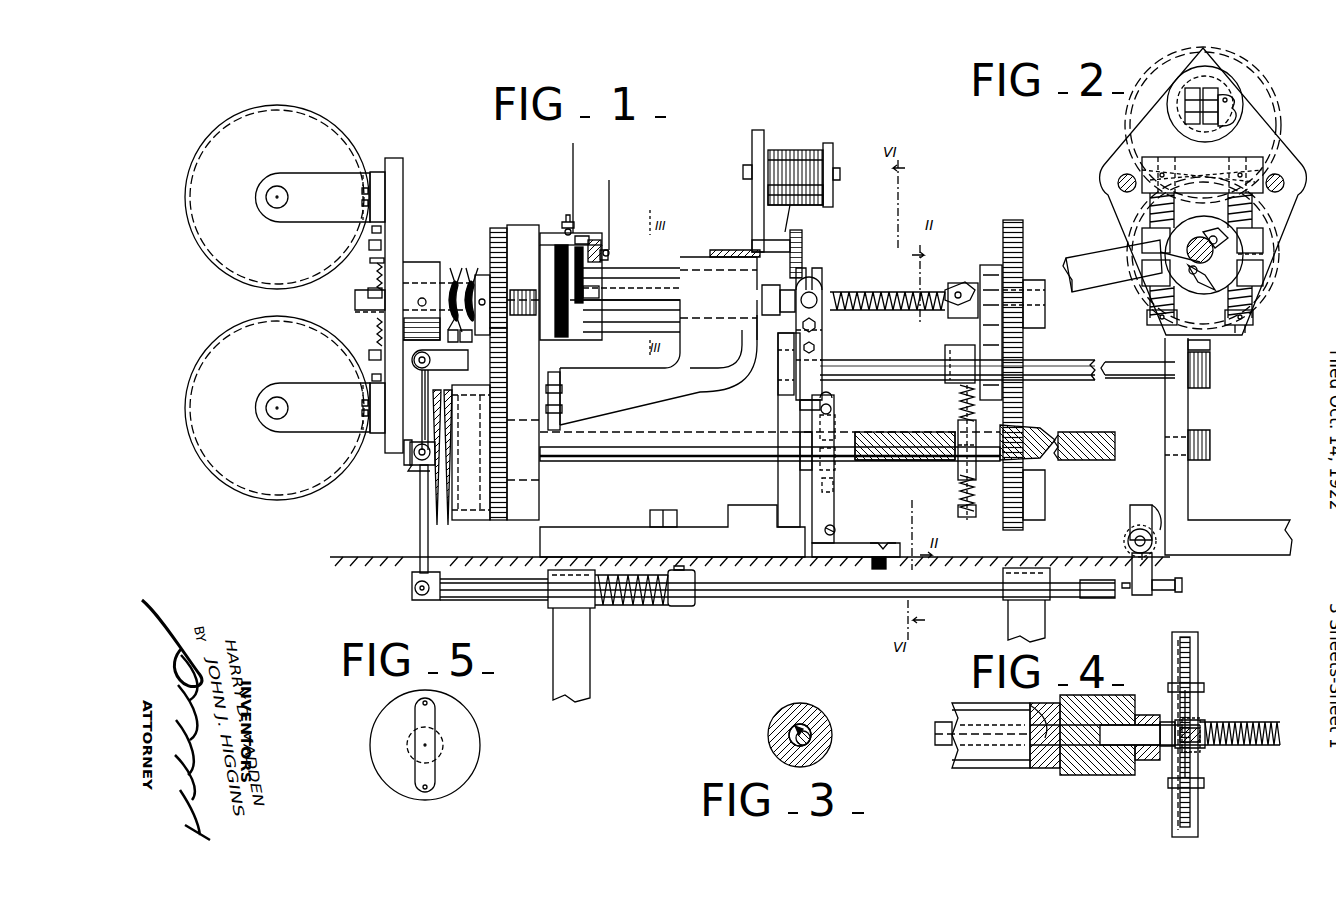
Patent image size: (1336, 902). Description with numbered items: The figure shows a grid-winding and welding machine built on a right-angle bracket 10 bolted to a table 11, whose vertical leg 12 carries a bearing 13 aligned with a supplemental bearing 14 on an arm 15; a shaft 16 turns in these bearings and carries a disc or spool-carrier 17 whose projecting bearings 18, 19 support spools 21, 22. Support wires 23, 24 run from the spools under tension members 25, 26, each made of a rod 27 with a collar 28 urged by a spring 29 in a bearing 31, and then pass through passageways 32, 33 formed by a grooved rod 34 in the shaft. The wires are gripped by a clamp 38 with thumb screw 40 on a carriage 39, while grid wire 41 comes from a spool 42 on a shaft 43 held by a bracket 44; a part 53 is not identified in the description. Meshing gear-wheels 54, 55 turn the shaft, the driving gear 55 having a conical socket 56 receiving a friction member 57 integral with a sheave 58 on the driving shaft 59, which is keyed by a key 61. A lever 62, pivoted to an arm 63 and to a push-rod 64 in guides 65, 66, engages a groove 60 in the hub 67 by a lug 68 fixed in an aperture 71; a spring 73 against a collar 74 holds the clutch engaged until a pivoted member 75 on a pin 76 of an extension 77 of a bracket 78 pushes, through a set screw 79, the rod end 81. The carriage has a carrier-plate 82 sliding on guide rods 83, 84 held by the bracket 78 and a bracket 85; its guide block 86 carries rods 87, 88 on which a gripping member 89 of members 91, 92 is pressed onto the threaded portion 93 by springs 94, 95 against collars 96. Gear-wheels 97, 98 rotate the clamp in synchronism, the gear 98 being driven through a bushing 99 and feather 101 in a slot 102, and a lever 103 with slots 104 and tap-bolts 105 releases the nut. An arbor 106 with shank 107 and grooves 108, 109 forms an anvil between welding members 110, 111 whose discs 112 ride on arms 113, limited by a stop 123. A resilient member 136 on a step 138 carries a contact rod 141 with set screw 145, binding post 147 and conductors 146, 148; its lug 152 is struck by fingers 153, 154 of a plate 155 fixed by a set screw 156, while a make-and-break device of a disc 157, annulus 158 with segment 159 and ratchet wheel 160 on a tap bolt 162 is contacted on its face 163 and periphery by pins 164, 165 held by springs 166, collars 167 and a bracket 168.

In FIG. 1, the right-angle bracket 10 is at (615, 527).
In FIG. 1, the platform or table 11 is at (398, 570).
In FIG. 1, the vertical leg 12 is at (536, 400).
In FIG. 1, the bearing 13 is at (510, 262).
In FIG. 1, the supplemental bearing 14 is at (737, 295).
In FIG. 1, the arm 15 is at (658, 362).
In FIG. 1, the shaft 16 is at (452, 280).
In FIG. 3, the shaft 16 is at (833, 732).
In FIG. 1, the disc or spool-carrier 17 is at (403, 168).
In FIG. 1, the projecting bearing 18 is at (295, 180).
In FIG. 1, the projecting bearing 19 is at (300, 388).
In FIG. 1, the spool 21 is at (212, 148).
In FIG. 1, the spool 22 is at (220, 343).
In FIG. 1, the support wire 23 is at (375, 290).
In FIG. 4, the support wire 23 is at (933, 730).
In FIG. 1, the support wire 24 is at (372, 312).
In FIG. 4, the support wire 24 is at (935, 745).
In FIG. 1, the tension member 25 is at (367, 274).
In FIG. 1, the tension member 26 is at (364, 335).
In FIG. 1, the rod 27 is at (384, 227).
In FIG. 1, the collar 28 is at (392, 300).
In FIG. 1, the spring 29 is at (382, 262).
In FIG. 1, the bearing 31 is at (380, 246).
In FIG. 1, the longitudinal passageway 32 is at (469, 338).
In FIG. 3, the longitudinal passageway 32 is at (805, 730).
In FIG. 4, the longitudinal passageway 32 is at (1030, 705).
In FIG. 1, the longitudinal passageway 33 is at (454, 338).
In FIG. 3, the longitudinal passageway 33 is at (818, 748).
In FIG. 4, the longitudinal passageway 33 is at (1085, 765).
In FIG. 3, the grooved rod 34 is at (776, 727).
In FIG. 4, the grooved rod 34 is at (1055, 752).
In FIG. 1, the clamp 38 is at (965, 280).
In FIG. 2, the clamp 38 is at (1192, 92).
In FIG. 1, the carriage 39 is at (965, 340).
In FIG. 1, the thumb screw 40 is at (948, 292).
In FIG. 2, the thumb screw 40 is at (1222, 96).
In FIG. 1, the grid wire 41 is at (797, 158).
In FIG. 1, the spool 42 is at (828, 192).
In FIG. 1, the shaft 43 is at (835, 174).
In FIG. 1, the bracket 44 is at (752, 148).
In FIG. 1, the link 53 is at (802, 258).
In FIG. 1, the gear-wheel 54 is at (497, 228).
In FIG. 1, the driving gear 55 is at (497, 520).
In FIG. 1, the conical socket 56 is at (468, 520).
In FIG. 1, the conical friction member 57 is at (440, 505).
In FIG. 1, the sheave or pulley 58 is at (440, 483).
In FIG. 1, the driving shaft 59 is at (605, 458).
In FIG. 2, the driving shaft 59 is at (1182, 268).
In FIG. 1, the groove 60 is at (420, 430).
In FIG. 1, the key 61 is at (546, 434).
In FIG. 1, the lever 62 is at (418, 478).
In FIG. 1, the arm 63 is at (440, 360).
In FIG. 1, the push-rod 64 is at (760, 598).
In FIG. 1, the guide 65 is at (562, 618).
In FIG. 1, the guide 66 is at (1008, 598).
In FIG. 1, the hub 67 is at (418, 466).
In FIG. 1, the lug 68 is at (428, 448).
In FIG. 1, the aperture 71 is at (430, 453).
In FIG. 1, the helical spring 73 is at (658, 605).
In FIG. 1, the collar 74 is at (690, 605).
In FIG. 1, the pivoted member 75 is at (1160, 568).
In FIG. 1, the pin 76 is at (1132, 541).
In FIG. 1, the extension 77 is at (1163, 525).
In FIG. 1, the bracket 78 is at (1195, 505).
In FIG. 1, the set screw 79 is at (1166, 590).
In FIG. 1, the end of rod 81 is at (1110, 598).
In FIG. 1, the carrier-plate 82 is at (1045, 368).
In FIG. 2, the carrier-plate 82 is at (1122, 152).
In FIG. 1, the guide rod 83 is at (1080, 368).
In FIG. 2, the guide rod 83 is at (1280, 175).
In FIG. 2, the guide rod 84 is at (1118, 183).
In FIG. 1, the bracket 85 is at (775, 480).
In FIG. 2, the guide block 86 is at (1200, 168).
In FIG. 1, the rigid rod 87 is at (970, 518).
In FIG. 2, the rigid rod 87 is at (1243, 325).
In FIG. 2, the rigid rod 88 is at (1162, 325).
In FIG. 2, the gripping member 89 is at (1265, 262).
In FIG. 2, the engaging member 91 is at (1265, 245).
In FIG. 2, the engaging member 92 is at (1262, 278).
In FIG. 1, the threaded portion of driving shaft 93 is at (905, 440).
In FIG. 2, the threaded portion of driving shaft 93 is at (1168, 256).
In FIG. 2, the helical spring 94 is at (1178, 212).
In FIG. 1, the spring 95 is at (960, 488).
In FIG. 2, the spring 95 is at (1222, 300).
In FIG. 2, the collar 96 is at (1235, 325).
In FIG. 1, the gear-wheel 97 is at (1028, 224).
In FIG. 2, the gear-wheel 97 is at (1262, 62).
In FIG. 1, the gear-wheel 98 is at (1025, 490).
In FIG. 1, the bushing 99 is at (978, 482).
In FIG. 1, the feather 101 is at (1040, 420).
In FIG. 1, the slot 102 is at (1075, 436).
In FIG. 2, the lever 103 is at (1112, 266).
In FIG. 2, the slot 104 is at (1214, 265).
In FIG. 2, the tap-bolt 105 is at (1202, 256).
In FIG. 4, the arbor 106 is at (1210, 748).
In FIG. 5, the arbor 106 is at (438, 720).
In FIG. 4, the shank 107 is at (1145, 752).
In FIG. 5, the shank 107 is at (440, 745).
In FIG. 4, the groove 108 is at (1208, 728).
In FIG. 4, the groove 109 is at (1200, 752).
In FIG. 4, the welding member 110 is at (1200, 668).
In FIG. 1, the welding member 111 is at (826, 318).
In FIG. 4, the welding member 111 is at (1196, 815).
In FIG. 4, the welding disc 112 is at (1185, 665).
In FIG. 4, the slidable arm 113 is at (1192, 640).
In FIG. 1, the stop 123 is at (770, 362).
In FIG. 1, the resilient member 136 is at (816, 510).
In FIG. 1, the step 138 is at (860, 540).
In FIG. 1, the contact rod 141 is at (838, 410).
In FIG. 1, the set screw 145 is at (840, 398).
In FIG. 1, the conductor 146 is at (610, 182).
In FIG. 1, the binding post 147 is at (836, 528).
In FIG. 1, the conductor 148 is at (570, 155).
In FIG. 1, the lug 152 is at (905, 432).
In FIG. 1, the finger 153 is at (840, 424).
In FIG. 1, the finger 154 is at (840, 492).
In FIG. 1, the circular plate 155 is at (845, 473).
In FIG. 1, the set screw 156 is at (812, 425).
In FIG. 1, the disc 157 is at (565, 350).
In FIG. 1, the metal annulus 158 is at (590, 352).
In FIG. 1, the segment 159 is at (631, 278).
In FIG. 1, the ratchet wheel 160 is at (555, 326).
In FIG. 1, the tap bolt 162 is at (600, 295).
In FIG. 1, the vertical face 163 is at (586, 340).
In FIG. 1, the contact pin 164 is at (612, 255).
In FIG. 1, the contact pin 165 is at (565, 222).
In FIG. 1, the helical spring 166 is at (578, 236).
In FIG. 1, the collar 167 is at (600, 245).
In FIG. 1, the bracket 168 is at (563, 230).